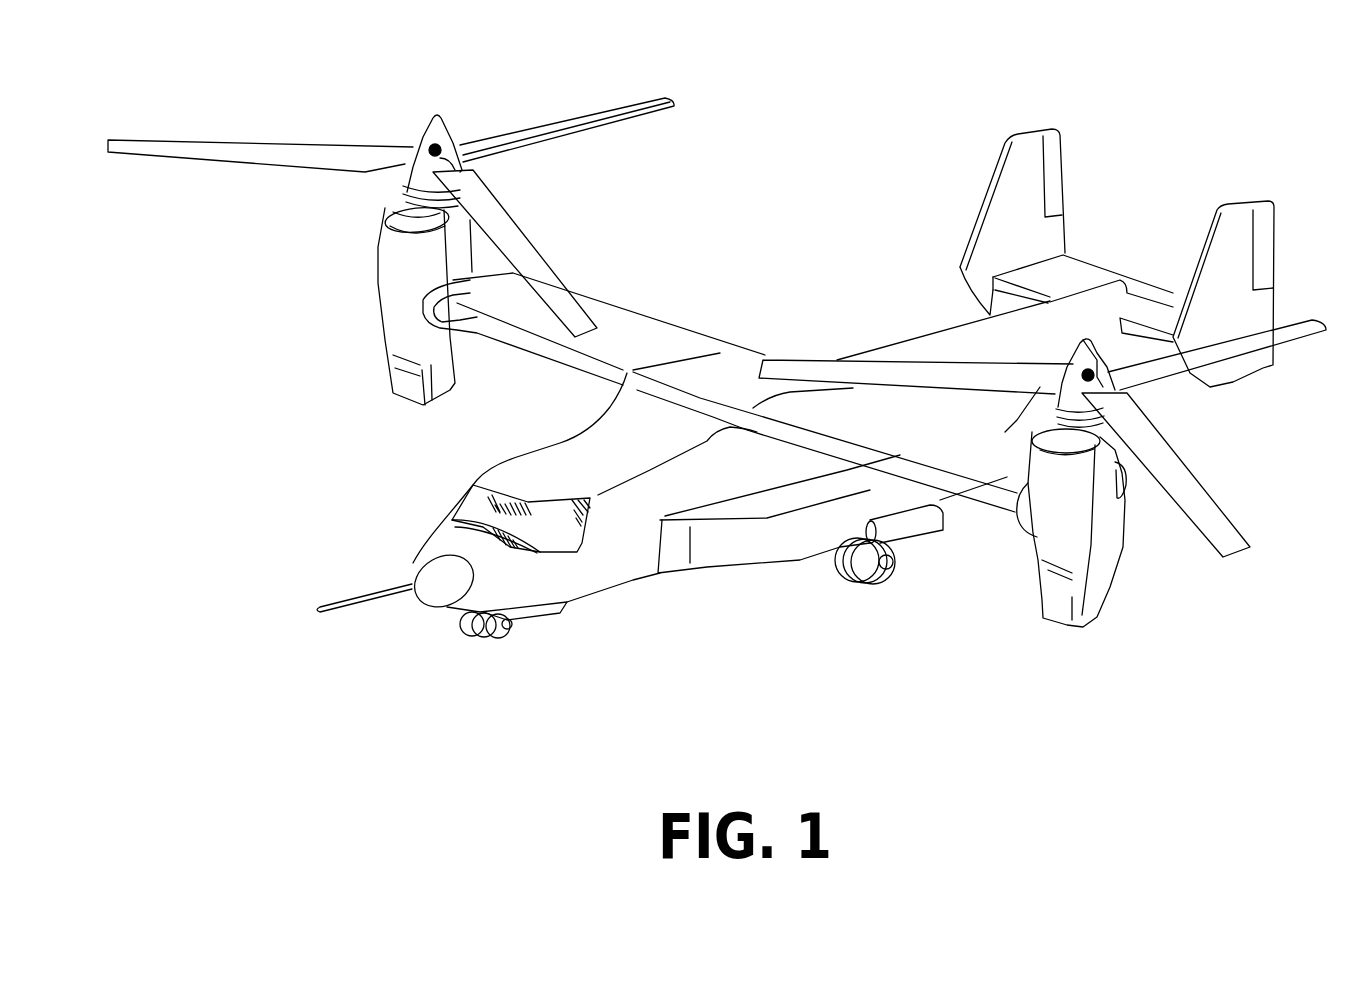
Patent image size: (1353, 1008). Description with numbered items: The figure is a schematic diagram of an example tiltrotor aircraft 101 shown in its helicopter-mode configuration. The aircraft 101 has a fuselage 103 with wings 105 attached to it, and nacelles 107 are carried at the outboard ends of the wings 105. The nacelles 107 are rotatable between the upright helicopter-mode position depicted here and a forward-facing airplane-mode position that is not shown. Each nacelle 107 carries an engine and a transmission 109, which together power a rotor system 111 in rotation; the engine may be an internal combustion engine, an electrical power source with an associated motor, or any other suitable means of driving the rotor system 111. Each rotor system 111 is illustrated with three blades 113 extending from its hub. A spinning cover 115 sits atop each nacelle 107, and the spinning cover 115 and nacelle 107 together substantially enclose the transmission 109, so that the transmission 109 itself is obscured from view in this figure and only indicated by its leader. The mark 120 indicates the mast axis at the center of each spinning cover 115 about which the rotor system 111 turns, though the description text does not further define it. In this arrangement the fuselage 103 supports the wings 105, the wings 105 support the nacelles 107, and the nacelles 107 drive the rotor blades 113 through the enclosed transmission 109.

The tiltrotor aircraft 101 is at (942, 113).
The fuselage 103 is at (703, 578).
The wings 105 is at (658, 324).
The nacelles 107 is at (385, 287).
The transmission 109 is at (387, 190).
The rotor system 111 is at (429, 111).
The blades 113 is at (257, 148).
The spinning cover 115 is at (423, 140).
The rotor mast axis 120 is at (441, 146).